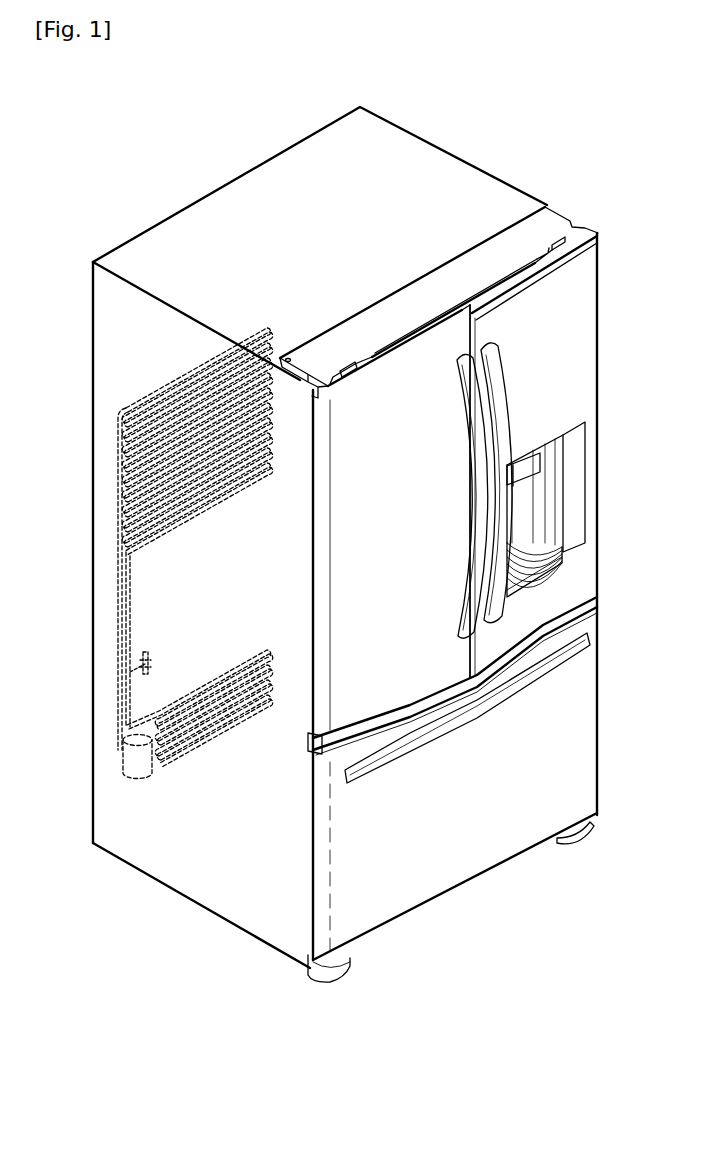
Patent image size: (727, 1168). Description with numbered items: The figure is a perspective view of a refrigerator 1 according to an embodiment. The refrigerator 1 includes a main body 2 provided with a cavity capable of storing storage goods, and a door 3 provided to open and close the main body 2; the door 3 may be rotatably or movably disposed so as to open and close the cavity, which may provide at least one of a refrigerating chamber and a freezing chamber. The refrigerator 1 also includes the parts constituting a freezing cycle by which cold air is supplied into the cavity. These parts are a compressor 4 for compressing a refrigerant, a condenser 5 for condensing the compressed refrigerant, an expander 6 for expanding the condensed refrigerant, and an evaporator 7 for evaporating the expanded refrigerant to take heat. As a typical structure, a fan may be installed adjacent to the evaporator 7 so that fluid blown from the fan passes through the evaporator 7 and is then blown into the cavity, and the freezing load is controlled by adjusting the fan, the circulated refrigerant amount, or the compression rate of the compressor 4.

The refrigerator 1 is at (423, 127).
The main body 2 is at (510, 205).
The door 3 is at (572, 392).
The compressor 4 is at (133, 760).
The condenser 5 is at (197, 738).
The expander 6 is at (148, 653).
The evaporator 7 is at (165, 383).